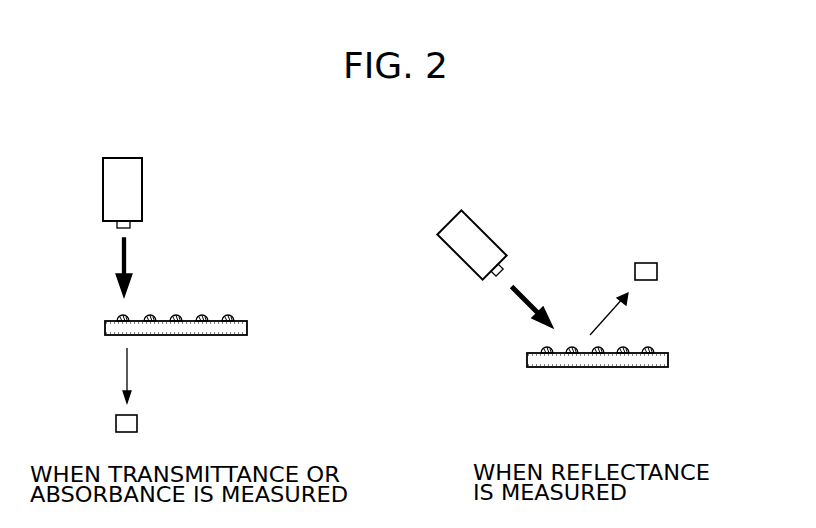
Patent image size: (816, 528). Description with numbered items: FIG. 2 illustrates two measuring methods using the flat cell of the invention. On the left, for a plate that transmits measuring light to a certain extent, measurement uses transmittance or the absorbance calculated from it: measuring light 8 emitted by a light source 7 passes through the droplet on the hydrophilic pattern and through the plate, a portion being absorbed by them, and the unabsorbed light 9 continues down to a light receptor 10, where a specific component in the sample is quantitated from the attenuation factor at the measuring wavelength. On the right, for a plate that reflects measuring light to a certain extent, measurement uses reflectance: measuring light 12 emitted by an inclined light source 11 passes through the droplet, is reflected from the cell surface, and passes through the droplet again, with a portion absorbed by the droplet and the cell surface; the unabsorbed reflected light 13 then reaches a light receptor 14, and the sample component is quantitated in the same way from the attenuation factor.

The light source 7 is at (142, 196).
The measuring light 8 is at (140, 281).
The unabsorbed light 9 is at (135, 369).
The light receptor 10 is at (137, 423).
The light source 11 is at (463, 263).
The measuring light 12 is at (523, 308).
The light 13 is at (602, 312).
The light receptor 14 is at (657, 272).